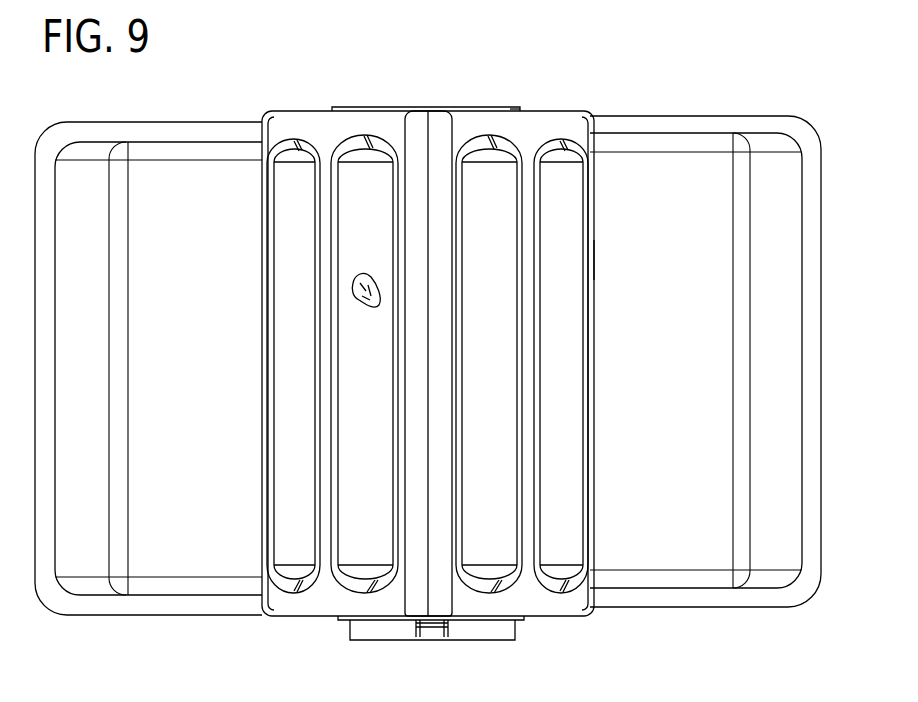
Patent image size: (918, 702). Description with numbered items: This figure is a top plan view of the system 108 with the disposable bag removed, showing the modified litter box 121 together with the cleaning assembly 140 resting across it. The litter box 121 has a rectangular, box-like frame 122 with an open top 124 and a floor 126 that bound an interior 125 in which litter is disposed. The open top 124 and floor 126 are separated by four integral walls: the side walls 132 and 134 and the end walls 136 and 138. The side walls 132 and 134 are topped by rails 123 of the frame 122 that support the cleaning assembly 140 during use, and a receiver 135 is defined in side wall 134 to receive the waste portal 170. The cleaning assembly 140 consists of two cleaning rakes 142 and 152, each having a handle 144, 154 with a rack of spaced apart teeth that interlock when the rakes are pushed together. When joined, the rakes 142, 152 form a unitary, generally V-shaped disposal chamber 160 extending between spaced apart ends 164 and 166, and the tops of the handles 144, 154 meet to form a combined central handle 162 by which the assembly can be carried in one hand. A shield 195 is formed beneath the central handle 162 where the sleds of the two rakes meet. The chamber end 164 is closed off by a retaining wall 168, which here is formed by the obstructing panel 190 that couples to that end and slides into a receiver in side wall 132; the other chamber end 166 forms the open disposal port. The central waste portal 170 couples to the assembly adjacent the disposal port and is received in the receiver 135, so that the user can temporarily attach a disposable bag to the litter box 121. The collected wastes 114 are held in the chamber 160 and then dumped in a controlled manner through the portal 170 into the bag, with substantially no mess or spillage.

The system 108 is at (262, 94).
The collected wastes 114 is at (357, 288).
The litter box 121 is at (709, 107).
The frame 122 is at (774, 122).
The rails 123 is at (165, 130).
The open top 124 is at (99, 617).
The interior 125 is at (650, 544).
The floor 126 is at (721, 296).
The side wall 132 is at (667, 148).
The side wall 134 is at (700, 580).
The receiver 135 is at (528, 619).
The end wall 136 is at (768, 443).
The end wall 138 is at (93, 405).
The cleaning assembly 140 is at (610, 257).
The cleaning rake 142 is at (570, 97).
The handle 144 is at (527, 309).
The cleaning rake 152 is at (311, 103).
The handle 154 is at (328, 268).
The disposal chamber 160 is at (449, 98).
The central handle 162 is at (404, 132).
The chamber end 164 is at (418, 110).
The chamber end 166 is at (399, 621).
The retaining wall 168 is at (353, 106).
The central waste portal 170 is at (328, 644).
The obstructing panel 190 is at (514, 98).
The shield 195 is at (490, 205).